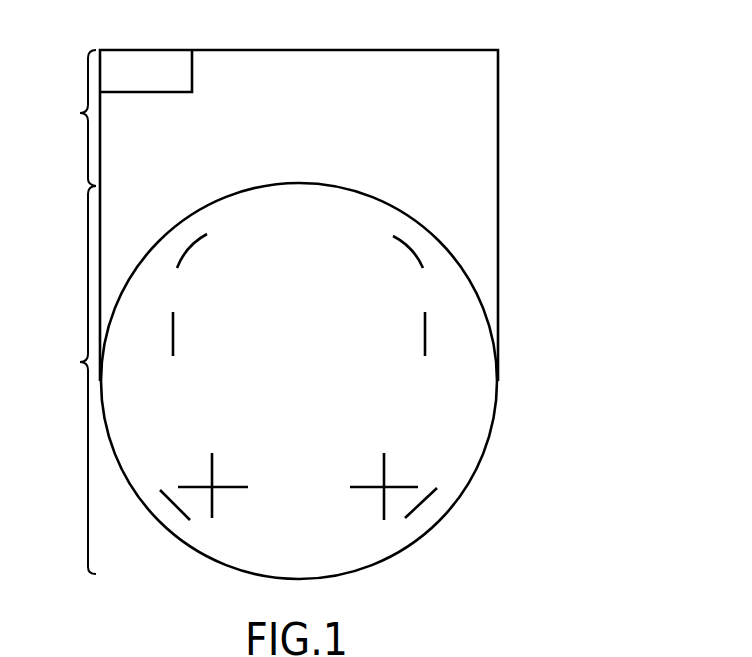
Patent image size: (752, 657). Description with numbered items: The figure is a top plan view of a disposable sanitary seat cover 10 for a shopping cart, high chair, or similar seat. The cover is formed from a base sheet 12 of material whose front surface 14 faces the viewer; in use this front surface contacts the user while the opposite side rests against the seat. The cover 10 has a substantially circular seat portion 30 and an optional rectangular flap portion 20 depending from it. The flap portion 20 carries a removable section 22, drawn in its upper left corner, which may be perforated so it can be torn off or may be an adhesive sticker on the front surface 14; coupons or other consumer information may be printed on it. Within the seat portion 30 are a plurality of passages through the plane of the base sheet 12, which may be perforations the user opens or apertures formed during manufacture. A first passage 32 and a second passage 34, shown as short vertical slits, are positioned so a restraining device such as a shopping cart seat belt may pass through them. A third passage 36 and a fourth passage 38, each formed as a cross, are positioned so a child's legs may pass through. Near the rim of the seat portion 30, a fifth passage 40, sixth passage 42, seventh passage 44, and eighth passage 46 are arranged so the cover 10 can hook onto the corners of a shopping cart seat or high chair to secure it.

The disposable sanitary seat cover 10 is at (525, 92).
The base sheet 12 is at (478, 168).
The front surface 14 is at (476, 84).
The flap portion 20 is at (70, 118).
The removable section 22 is at (147, 62).
The seat portion 30 is at (270, 381).
The first passage 32 is at (175, 327).
The second passage 34 is at (423, 333).
The third passage 36 is at (231, 485).
The fourth passage 38 is at (362, 484).
The fifth passage 40 is at (185, 254).
The sixth passage 42 is at (397, 242).
The seventh passage 44 is at (162, 490).
The eighth passage 46 is at (428, 495).